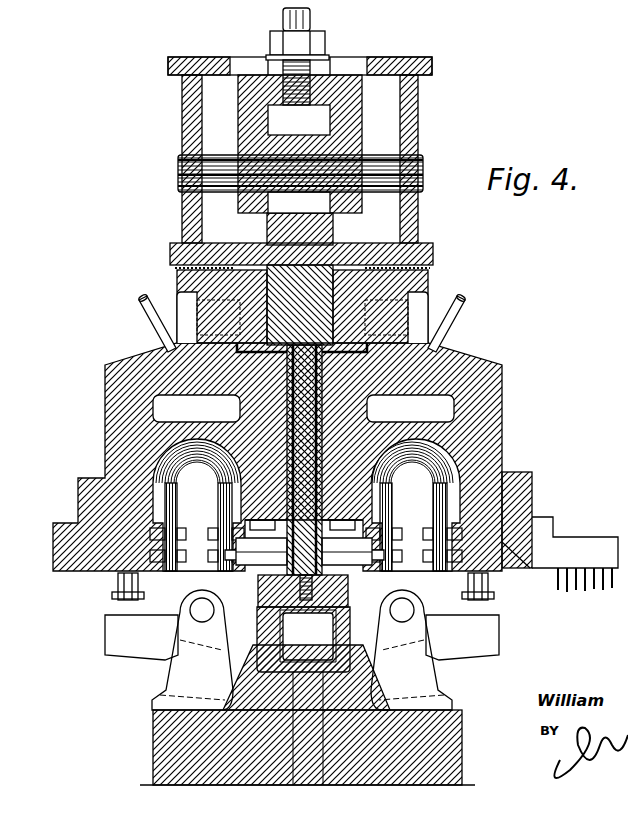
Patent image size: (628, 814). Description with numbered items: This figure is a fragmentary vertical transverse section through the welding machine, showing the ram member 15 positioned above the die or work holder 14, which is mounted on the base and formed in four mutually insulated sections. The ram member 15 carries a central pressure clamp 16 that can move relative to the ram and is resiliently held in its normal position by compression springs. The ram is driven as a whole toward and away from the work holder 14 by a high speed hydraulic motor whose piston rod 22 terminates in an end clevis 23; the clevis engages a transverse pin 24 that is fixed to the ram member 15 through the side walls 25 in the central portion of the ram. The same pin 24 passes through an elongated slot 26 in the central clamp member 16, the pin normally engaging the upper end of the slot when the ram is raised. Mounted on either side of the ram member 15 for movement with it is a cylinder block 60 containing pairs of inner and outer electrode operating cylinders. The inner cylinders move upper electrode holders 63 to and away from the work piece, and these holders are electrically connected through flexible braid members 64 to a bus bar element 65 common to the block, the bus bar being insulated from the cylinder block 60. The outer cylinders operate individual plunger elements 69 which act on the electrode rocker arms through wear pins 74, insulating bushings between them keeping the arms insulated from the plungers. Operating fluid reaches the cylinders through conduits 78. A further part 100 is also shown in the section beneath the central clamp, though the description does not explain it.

The die or work holder 14 is at (462, 742).
The ram member 15 is at (433, 250).
The central pressure clamp 16 is at (295, 387).
The piston rod 22 is at (312, 20).
The end clevis 23 is at (362, 115).
The transverse pin 24 is at (420, 165).
The side walls 25 is at (418, 136).
The elongated slot 26 is at (330, 202).
The cylinder block 60 is at (500, 365).
The upper electrode holder 63 is at (222, 565).
The flexible braid member 64 is at (220, 497).
The bus bar element 65 is at (533, 500).
The plunger element 69 is at (116, 596).
The wear pin 74 is at (145, 616).
The conduit 78 is at (150, 322).
The cup 100 is at (303, 639).